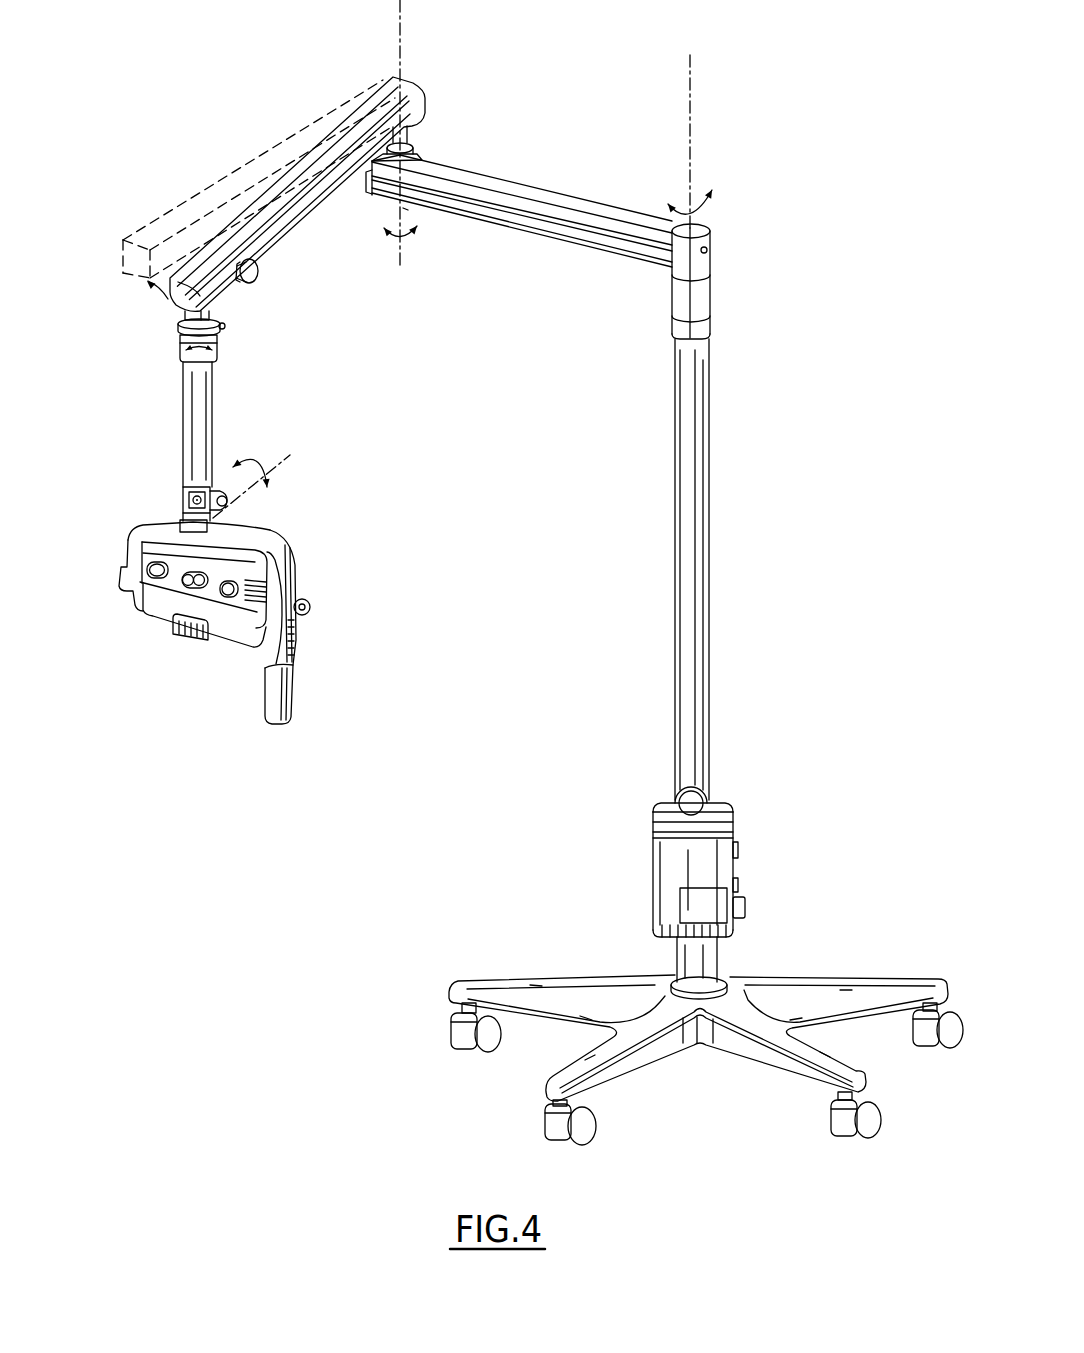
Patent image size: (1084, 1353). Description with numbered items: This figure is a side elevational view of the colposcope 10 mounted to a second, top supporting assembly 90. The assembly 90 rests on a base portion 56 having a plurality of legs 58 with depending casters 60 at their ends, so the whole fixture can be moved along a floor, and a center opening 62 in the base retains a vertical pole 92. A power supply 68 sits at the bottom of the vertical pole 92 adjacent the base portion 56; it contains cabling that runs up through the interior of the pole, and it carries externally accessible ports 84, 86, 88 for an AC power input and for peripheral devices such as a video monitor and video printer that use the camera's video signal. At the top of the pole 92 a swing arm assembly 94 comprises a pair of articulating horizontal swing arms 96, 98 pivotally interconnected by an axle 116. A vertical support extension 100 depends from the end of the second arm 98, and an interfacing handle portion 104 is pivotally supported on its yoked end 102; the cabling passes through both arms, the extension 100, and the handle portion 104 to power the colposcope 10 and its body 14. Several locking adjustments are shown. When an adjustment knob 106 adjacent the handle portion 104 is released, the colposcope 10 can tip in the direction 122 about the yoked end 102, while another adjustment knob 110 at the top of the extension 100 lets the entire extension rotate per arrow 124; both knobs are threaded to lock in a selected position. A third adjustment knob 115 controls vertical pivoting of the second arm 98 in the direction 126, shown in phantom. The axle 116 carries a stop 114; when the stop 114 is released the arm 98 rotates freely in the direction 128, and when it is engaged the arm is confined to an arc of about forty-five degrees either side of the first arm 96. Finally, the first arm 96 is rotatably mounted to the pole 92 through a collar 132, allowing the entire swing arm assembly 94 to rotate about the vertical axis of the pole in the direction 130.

The colposcope 10 is at (127, 536).
The head housing 14 is at (160, 613).
The base portion 56 is at (690, 1038).
The legs 58 is at (480, 980).
The casters 60 is at (543, 1113).
The center opening 62 is at (677, 973).
The power supply 68 is at (668, 870).
The port 84 is at (738, 848).
The port 86 is at (739, 884).
The port 88 is at (746, 913).
The top supporting assembly 90 is at (788, 293).
The vertical pole 92 is at (680, 520).
The swing arm assembly 94 is at (318, 99).
The first articulating arm 96 is at (593, 207).
The second articulating arm 98 is at (293, 218).
The vertical support extension 100 is at (208, 413).
The yoked end 102 is at (180, 487).
The interfacing handle portion 104 is at (293, 550).
The adjustment knob 106 is at (228, 503).
The adjustment knob 110 is at (225, 325).
The stop 114 is at (407, 208).
The third adjustment knob 115 is at (262, 276).
The axle 116 is at (408, 140).
The direction 122 is at (258, 453).
The arrow 124 is at (218, 356).
The direction 126 is at (177, 298).
The direction 128 is at (403, 253).
The direction 130 is at (713, 207).
The collar 132 is at (712, 303).